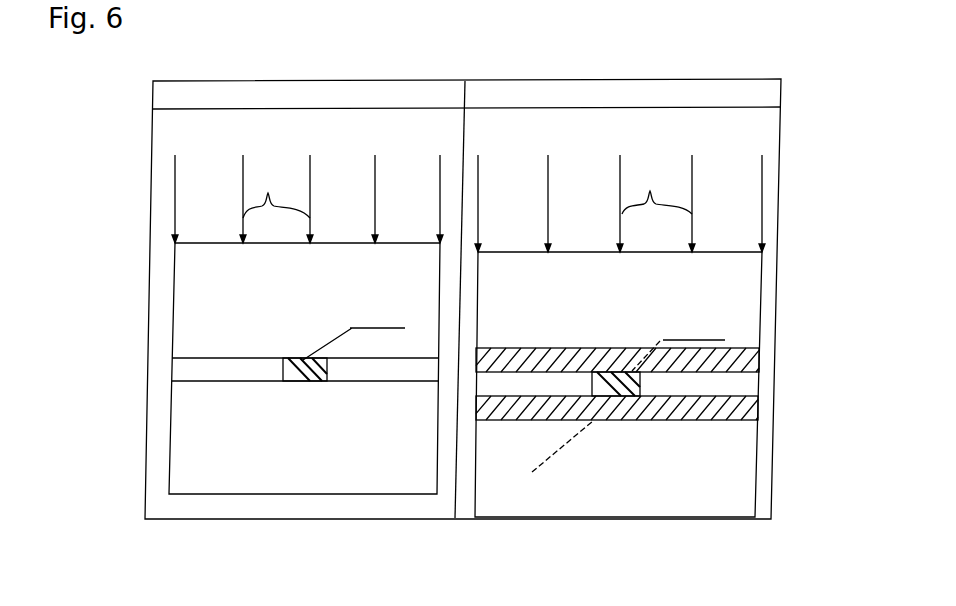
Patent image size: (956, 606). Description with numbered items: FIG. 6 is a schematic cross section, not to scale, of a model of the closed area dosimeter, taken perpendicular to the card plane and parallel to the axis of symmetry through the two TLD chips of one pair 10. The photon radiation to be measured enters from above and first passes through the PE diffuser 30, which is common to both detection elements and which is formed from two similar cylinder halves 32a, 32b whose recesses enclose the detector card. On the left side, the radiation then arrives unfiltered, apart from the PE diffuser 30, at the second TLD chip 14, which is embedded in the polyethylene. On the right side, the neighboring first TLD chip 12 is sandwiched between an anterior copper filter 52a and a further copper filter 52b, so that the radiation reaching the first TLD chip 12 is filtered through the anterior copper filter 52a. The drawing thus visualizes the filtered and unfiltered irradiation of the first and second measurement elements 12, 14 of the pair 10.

The pair of detection elements 10 is at (752, 532).
The first TLD chip 12 is at (640, 384).
The second TLD chip 14 is at (280, 370).
The PE diffuser 30 is at (170, 473).
The cylinder half 32a is at (190, 318).
The cylinder half 32b is at (190, 442).
The anterior copper filter 52a is at (759, 360).
The posterior copper filter 52b is at (759, 410).